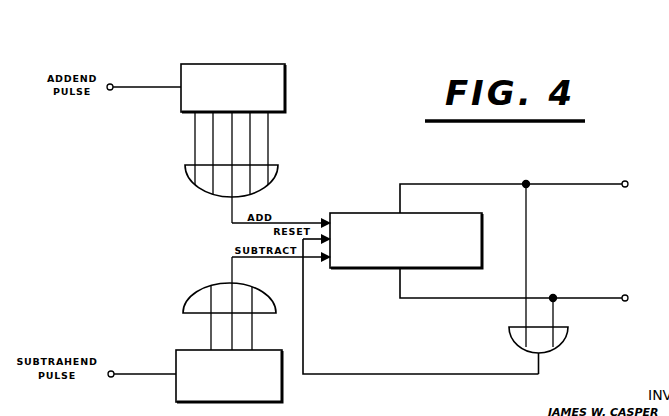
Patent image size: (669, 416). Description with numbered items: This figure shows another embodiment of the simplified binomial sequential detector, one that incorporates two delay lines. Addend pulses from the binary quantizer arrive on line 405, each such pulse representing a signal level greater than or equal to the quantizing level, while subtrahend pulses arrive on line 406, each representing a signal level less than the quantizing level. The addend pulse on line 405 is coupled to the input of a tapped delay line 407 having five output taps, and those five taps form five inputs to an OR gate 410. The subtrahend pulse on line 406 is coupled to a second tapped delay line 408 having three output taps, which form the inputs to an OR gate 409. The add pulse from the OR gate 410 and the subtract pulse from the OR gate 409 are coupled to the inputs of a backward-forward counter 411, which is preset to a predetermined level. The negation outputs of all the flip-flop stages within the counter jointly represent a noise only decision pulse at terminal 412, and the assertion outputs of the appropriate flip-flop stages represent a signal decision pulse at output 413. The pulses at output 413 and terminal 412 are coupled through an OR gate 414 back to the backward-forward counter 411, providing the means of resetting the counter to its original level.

The line 405 is at (158, 73).
The line 406 is at (157, 361).
The tapped delay line 407 is at (250, 64).
The tapped delay line 408 is at (283, 393).
The OR gate 409 is at (219, 286).
The OR gate 410 is at (275, 183).
The backward-forward counter 411 is at (482, 248).
The terminal 412 is at (631, 282).
The output 413 is at (624, 188).
The OR gate 414 is at (558, 349).